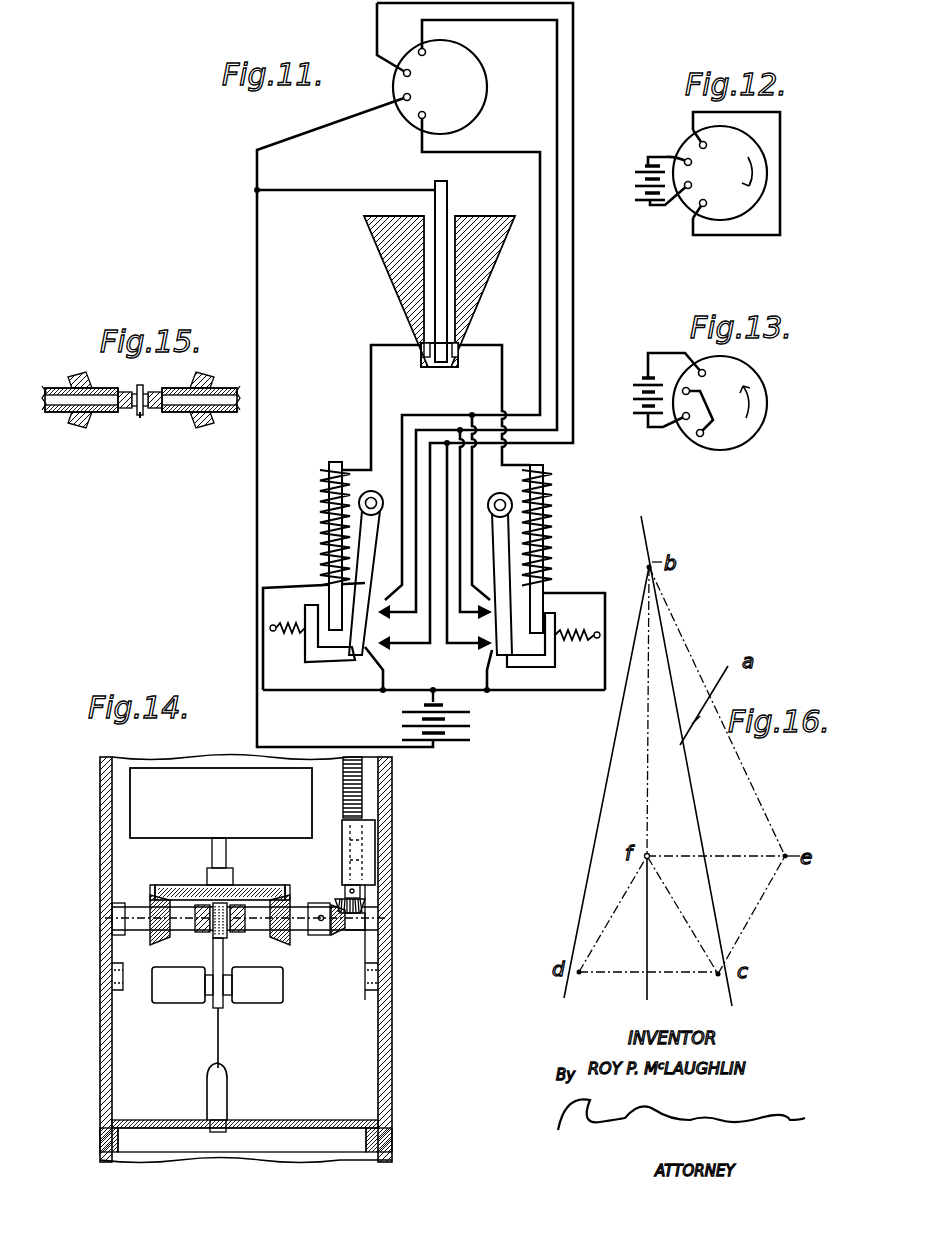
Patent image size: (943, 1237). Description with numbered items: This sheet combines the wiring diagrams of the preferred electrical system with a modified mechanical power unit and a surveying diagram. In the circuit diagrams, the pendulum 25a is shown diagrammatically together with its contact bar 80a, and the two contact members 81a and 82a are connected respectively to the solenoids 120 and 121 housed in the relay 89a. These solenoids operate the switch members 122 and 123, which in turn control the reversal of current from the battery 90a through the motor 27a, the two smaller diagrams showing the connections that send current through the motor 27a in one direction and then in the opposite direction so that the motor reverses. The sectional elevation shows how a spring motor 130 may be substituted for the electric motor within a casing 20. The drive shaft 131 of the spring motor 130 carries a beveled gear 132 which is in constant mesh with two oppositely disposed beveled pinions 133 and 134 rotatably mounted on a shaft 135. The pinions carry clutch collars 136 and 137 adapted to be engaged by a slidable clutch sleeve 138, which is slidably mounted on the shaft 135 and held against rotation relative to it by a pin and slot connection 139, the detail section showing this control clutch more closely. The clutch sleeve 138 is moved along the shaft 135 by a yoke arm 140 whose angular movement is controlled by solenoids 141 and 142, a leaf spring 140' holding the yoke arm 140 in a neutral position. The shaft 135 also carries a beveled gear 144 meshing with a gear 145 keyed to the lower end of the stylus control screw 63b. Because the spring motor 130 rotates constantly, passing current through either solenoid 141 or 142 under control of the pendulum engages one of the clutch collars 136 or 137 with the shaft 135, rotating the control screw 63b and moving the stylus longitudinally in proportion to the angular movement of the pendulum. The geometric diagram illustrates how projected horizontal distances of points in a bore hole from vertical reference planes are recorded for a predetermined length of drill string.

In FIG. 11, the motor 27a is at (483, 80).
In FIG. 12, the motor 27a is at (729, 173).
In FIG. 13, the motor 27a is at (720, 401).
In FIG. 11, the contact bar 80a is at (443, 203).
In FIG. 11, the pendulum 25a is at (386, 250).
In FIG. 11, the contact member 81a is at (420, 345).
In FIG. 11, the contact member 82a is at (462, 345).
In FIG. 11, the solenoid 120 is at (333, 461).
In FIG. 11, the solenoid 121 is at (543, 468).
In FIG. 11, the switch member 122 is at (366, 562).
In FIG. 11, the switch member 123 is at (500, 542).
In FIG. 11, the relay 89a is at (556, 520).
In FIG. 11, the battery 90a is at (493, 718).
In FIG. 14, the casing 20 is at (100, 1048).
In FIG. 14, the stylus control screw 63b is at (362, 790).
In FIG. 14, the spring motor 130 is at (293, 832).
In FIG. 14, the drive shaft 131 is at (214, 850).
In FIG. 14, the beveled gear 132 is at (256, 890).
In FIG. 15, the beveled pinion 133 is at (80, 425).
In FIG. 14, the beveled pinion 133 is at (160, 938).
In FIG. 15, the beveled pinion 134 is at (200, 425).
In FIG. 14, the beveled pinion 134 is at (282, 935).
In FIG. 15, the shaft 135 is at (218, 398).
In FIG. 14, the shaft 135 is at (380, 928).
In FIG. 15, the clutch collar 136 is at (108, 414).
In FIG. 14, the clutch collar 136 is at (196, 932).
In FIG. 15, the clutch collar 137 is at (160, 414).
In FIG. 14, the clutch collar 137 is at (252, 932).
In FIG. 15, the clutch sleeve 138 is at (126, 391).
In FIG. 14, the clutch sleeve 138 is at (208, 905).
In FIG. 15, the pin and slot connection 139 is at (147, 390).
In FIG. 14, the yoke arm 140 is at (242, 1070).
In FIG. 15, the leaf spring 140' is at (139, 425).
In FIG. 14, the leaf spring 140' is at (196, 967).
In FIG. 14, the solenoid 141 is at (157, 1005).
In FIG. 14, the solenoid 142 is at (280, 1000).
In FIG. 14, the beveled gear 144 is at (370, 933).
In FIG. 14, the gear 145 is at (345, 900).